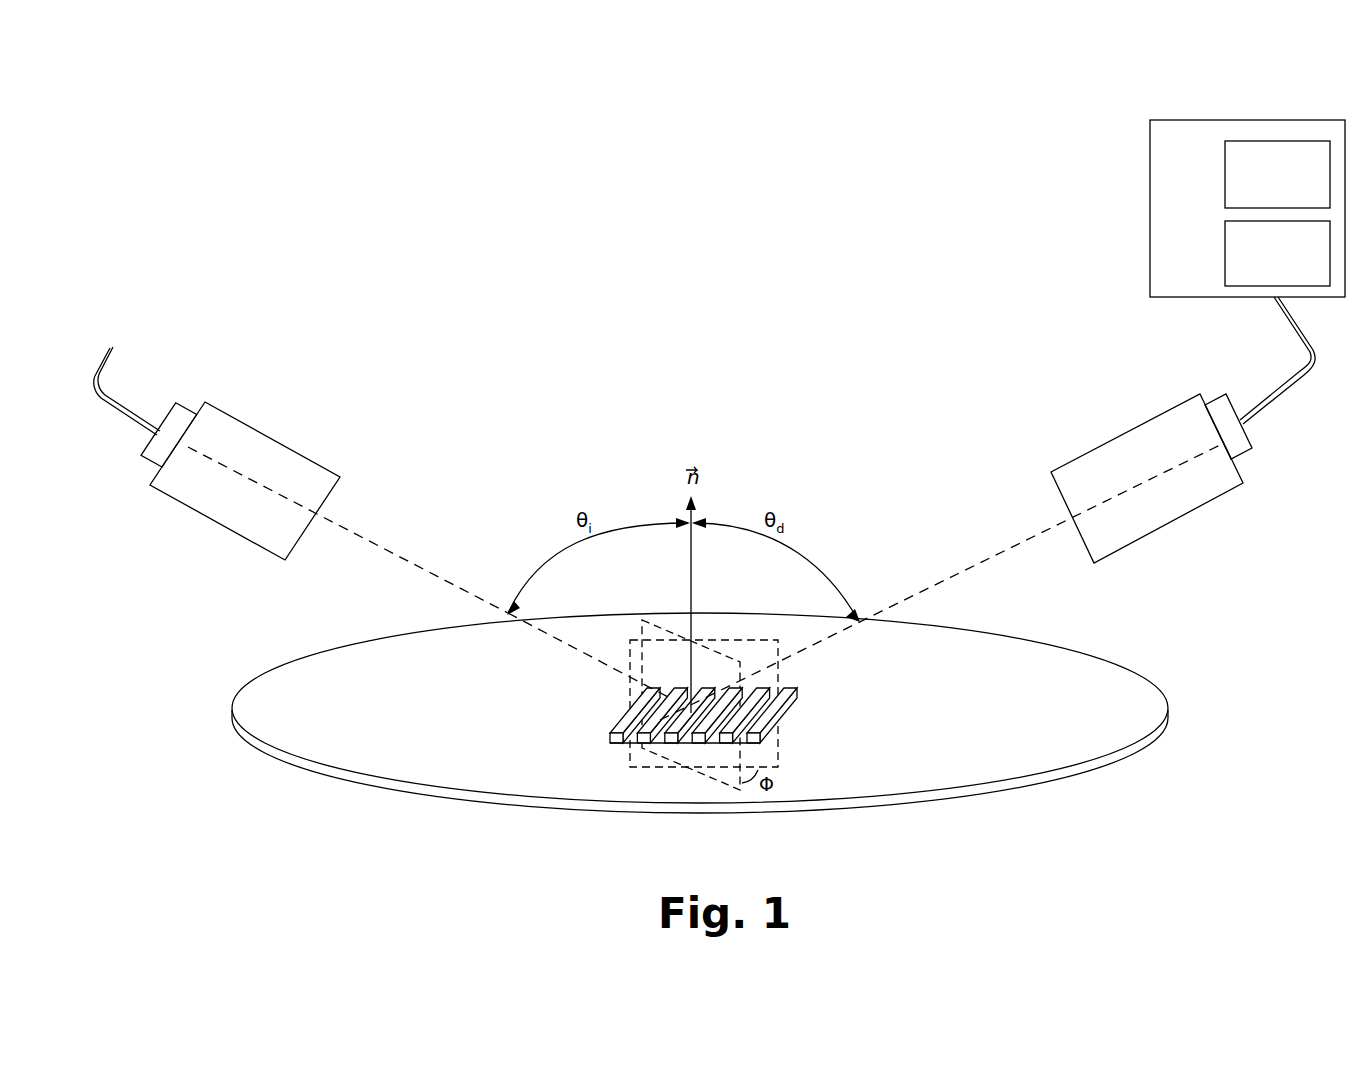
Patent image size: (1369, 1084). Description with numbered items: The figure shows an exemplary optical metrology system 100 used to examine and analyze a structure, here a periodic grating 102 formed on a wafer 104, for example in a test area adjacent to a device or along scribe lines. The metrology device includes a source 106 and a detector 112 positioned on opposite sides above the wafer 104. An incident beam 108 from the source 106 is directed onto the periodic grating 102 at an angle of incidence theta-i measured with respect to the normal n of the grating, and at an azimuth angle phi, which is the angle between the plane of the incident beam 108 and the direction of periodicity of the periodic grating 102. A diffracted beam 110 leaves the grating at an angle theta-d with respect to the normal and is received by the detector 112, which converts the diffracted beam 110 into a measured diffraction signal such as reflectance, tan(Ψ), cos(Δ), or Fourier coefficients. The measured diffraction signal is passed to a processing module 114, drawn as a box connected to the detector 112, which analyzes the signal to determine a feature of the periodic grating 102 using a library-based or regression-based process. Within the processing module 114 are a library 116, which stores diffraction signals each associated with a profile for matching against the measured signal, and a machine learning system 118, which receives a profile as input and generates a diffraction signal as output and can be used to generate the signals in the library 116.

The metrology system 100 is at (292, 241).
The periodic grating 102 is at (608, 759).
The wafer 104 is at (310, 652).
The source 106 is at (252, 427).
The incident beam 108 is at (352, 532).
The diffracted beam 110 is at (977, 562).
The detector 112 is at (1246, 482).
The processing module 114 is at (1208, 153).
The library 116 is at (1294, 264).
The machine learning system 118 is at (1294, 186).